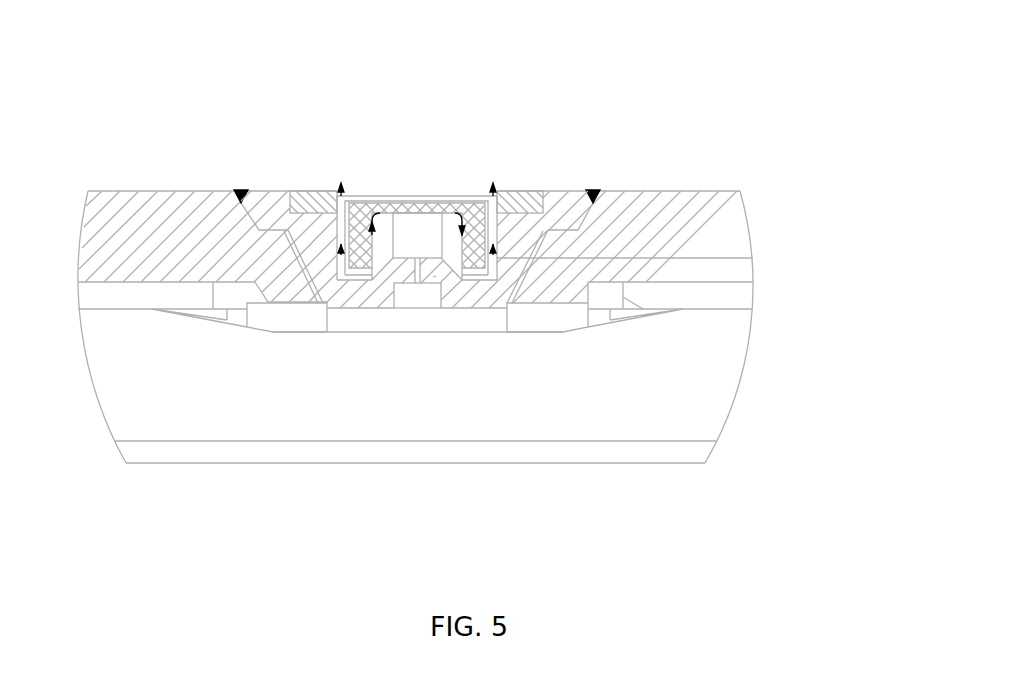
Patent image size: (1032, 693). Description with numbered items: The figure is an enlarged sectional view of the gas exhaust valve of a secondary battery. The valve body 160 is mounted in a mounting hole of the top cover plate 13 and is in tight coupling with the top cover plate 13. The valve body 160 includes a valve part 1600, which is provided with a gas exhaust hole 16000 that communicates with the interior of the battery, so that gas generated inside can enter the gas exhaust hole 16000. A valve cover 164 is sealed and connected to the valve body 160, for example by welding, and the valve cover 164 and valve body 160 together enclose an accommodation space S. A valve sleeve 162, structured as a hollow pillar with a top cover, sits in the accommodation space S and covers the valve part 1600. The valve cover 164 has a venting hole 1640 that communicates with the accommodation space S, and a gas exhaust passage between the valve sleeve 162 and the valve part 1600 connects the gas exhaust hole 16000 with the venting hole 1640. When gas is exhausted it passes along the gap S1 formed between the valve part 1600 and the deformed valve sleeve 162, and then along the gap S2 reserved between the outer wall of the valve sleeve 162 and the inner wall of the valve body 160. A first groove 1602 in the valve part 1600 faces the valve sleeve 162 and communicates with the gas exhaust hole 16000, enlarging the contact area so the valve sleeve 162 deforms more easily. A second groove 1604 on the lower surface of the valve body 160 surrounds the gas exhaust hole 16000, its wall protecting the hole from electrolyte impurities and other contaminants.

The top cover plate 13 is at (193, 228).
The valve body 160 is at (273, 202).
The valve part 1600 is at (383, 262).
The venting hole 1640 is at (373, 193).
The valve sleeve 162 is at (412, 207).
The first groove 1602 is at (427, 233).
The valve cover 164 is at (530, 193).
The second groove 1604 is at (413, 292).
The gas exhaust hole 16000 is at (455, 265).
The accommodation space S is at (433, 277).
The gas exhaust passage section S1 is at (419, 232).
The accommodation space gap section S2 is at (420, 219).